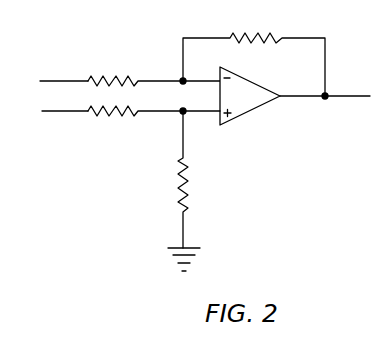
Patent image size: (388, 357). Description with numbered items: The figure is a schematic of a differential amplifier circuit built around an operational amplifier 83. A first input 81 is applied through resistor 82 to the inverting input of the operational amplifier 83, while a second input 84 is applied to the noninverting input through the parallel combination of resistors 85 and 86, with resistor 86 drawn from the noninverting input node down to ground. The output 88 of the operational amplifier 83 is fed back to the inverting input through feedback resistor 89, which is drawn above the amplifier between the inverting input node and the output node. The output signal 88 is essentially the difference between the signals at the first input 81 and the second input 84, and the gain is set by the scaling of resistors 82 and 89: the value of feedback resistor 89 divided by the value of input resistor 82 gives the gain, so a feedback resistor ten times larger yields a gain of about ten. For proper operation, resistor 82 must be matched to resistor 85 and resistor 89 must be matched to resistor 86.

The first input 81 is at (60, 81).
The resistor 82 is at (111, 77).
The operational amplifier 83 is at (235, 122).
The second input 84 is at (49, 112).
The resistor 85 is at (107, 113).
The resistor 86 is at (178, 198).
The output 88 is at (297, 98).
The feedback resistor 89 is at (282, 40).